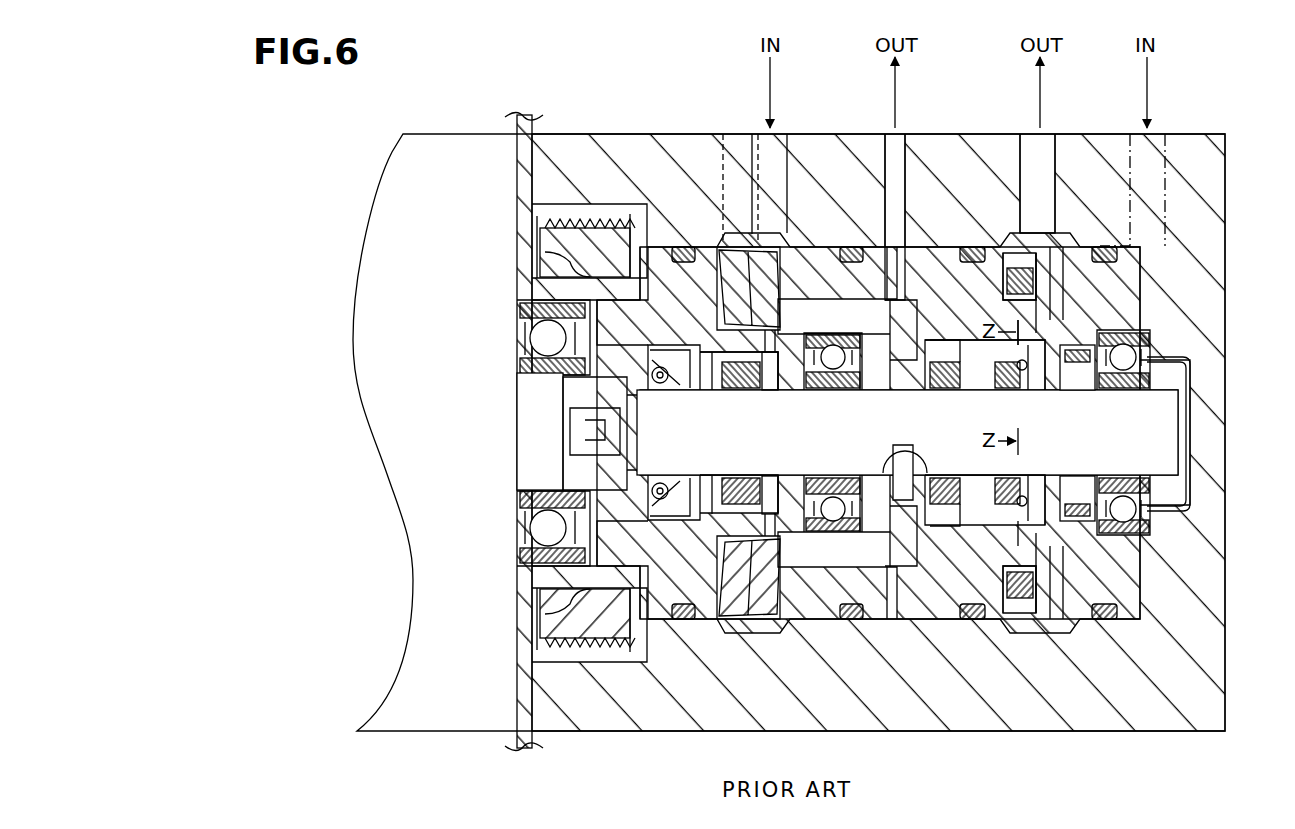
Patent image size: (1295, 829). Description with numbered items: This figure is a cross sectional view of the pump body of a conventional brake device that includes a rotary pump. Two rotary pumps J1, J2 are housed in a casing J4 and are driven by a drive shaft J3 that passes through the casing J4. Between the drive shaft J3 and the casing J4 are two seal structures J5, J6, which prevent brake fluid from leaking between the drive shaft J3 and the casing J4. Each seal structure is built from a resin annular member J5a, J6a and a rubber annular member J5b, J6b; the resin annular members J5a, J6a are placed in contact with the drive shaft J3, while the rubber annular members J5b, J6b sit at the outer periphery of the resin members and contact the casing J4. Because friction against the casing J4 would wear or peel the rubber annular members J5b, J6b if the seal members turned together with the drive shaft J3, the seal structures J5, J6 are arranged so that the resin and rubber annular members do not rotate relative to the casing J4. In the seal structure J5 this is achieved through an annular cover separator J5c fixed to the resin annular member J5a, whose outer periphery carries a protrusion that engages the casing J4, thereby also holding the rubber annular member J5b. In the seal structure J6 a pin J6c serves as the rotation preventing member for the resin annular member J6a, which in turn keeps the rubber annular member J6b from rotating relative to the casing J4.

The rotary pump J1 is at (1085, 375).
The rotary pump J2 is at (878, 333).
The drive shaft J3 is at (1150, 433).
The casing J4 is at (958, 548).
The seal structure J5 is at (994, 325).
The resin annular member J5a is at (968, 355).
The rubber annular member J5b is at (942, 368).
The annular cover separator J5c is at (1025, 358).
The seal structure J6 is at (705, 283).
The resin annular member J6a is at (718, 358).
The rubber annular member J6b is at (740, 372).
The pin J6c is at (757, 380).